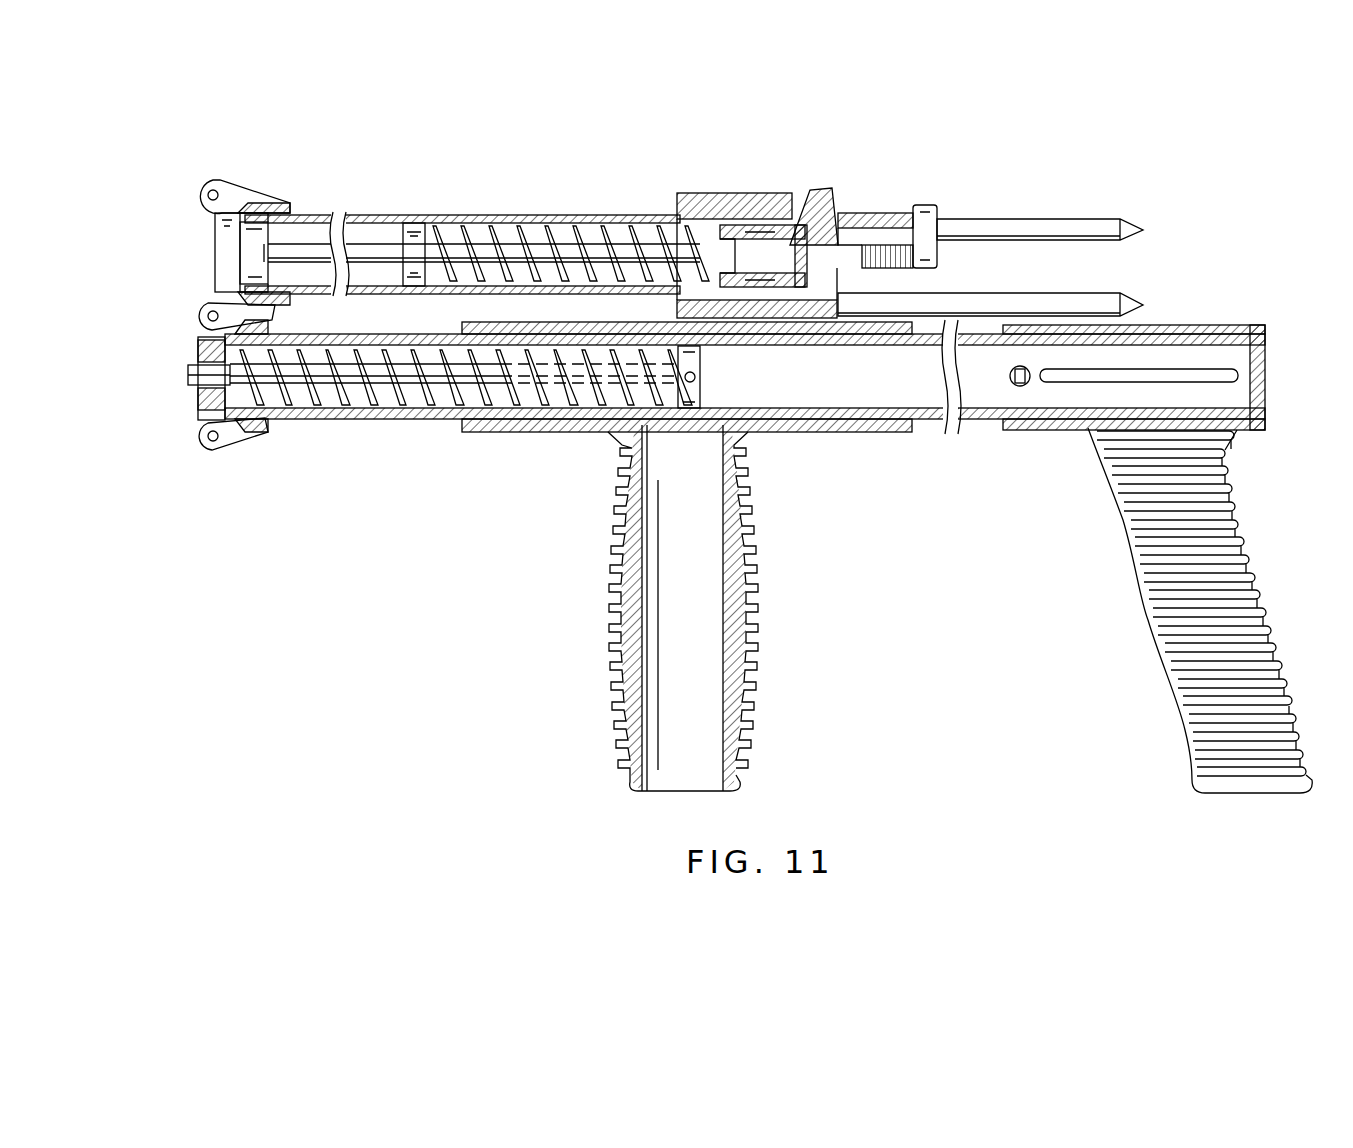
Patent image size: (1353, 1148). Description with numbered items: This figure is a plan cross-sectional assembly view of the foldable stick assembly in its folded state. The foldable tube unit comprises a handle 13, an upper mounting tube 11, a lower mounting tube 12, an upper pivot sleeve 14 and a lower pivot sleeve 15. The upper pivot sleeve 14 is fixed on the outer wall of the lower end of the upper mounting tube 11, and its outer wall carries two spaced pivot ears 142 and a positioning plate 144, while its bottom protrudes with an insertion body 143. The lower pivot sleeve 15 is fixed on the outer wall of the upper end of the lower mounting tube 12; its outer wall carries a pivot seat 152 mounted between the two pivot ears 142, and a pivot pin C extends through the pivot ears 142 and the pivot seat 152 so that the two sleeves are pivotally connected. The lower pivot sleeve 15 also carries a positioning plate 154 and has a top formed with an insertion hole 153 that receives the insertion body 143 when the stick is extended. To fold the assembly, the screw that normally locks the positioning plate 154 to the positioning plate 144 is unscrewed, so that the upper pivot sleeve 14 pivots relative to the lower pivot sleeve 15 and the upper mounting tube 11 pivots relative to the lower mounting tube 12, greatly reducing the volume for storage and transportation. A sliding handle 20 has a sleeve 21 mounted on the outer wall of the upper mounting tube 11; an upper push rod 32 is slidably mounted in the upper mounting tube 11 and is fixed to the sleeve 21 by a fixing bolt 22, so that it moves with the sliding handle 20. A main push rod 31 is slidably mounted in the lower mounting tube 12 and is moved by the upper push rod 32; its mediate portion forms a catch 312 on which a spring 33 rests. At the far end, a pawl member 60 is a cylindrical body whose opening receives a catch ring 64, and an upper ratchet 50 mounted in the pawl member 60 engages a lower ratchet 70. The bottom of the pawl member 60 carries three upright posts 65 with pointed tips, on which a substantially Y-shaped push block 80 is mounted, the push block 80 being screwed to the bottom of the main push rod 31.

The upper mounting tube 11 is at (440, 422).
The lower mounting tube 12 is at (538, 214).
The handle 13 is at (1130, 615).
The upper pivot sleeve 14 is at (262, 425).
The lower pivot sleeve 15 is at (285, 208).
The sliding handle 20 is at (612, 618).
The sleeve 21 is at (825, 432).
The fixing bolt 22 is at (696, 378).
The main push rod 31 is at (470, 247).
The upper push rod 32 is at (385, 400).
The spring 33 is at (516, 240).
The catch 312 is at (410, 222).
The upper ratchet 50 is at (798, 218).
The pawl member 60 is at (810, 195).
The catch ring 64 is at (680, 210).
The upright posts 65 is at (1045, 222).
The lower ratchet 70 is at (845, 205).
The push block 80 is at (925, 210).
The pivot ears 142 is at (197, 322).
The insertion body 143 is at (198, 402).
The positioning plate 144 is at (222, 455).
The pivot seat 152 is at (388, 379).
The insertion hole 153 is at (215, 254).
The positioning plate 154 is at (200, 186).
The pivot pin C is at (200, 310).